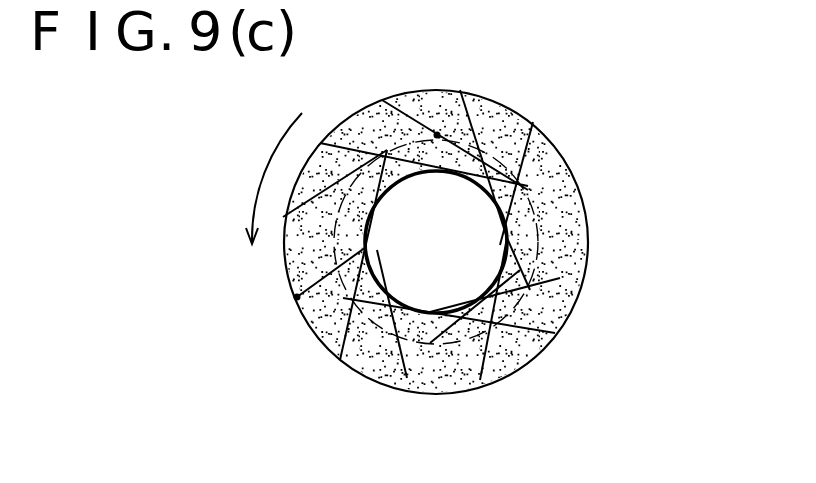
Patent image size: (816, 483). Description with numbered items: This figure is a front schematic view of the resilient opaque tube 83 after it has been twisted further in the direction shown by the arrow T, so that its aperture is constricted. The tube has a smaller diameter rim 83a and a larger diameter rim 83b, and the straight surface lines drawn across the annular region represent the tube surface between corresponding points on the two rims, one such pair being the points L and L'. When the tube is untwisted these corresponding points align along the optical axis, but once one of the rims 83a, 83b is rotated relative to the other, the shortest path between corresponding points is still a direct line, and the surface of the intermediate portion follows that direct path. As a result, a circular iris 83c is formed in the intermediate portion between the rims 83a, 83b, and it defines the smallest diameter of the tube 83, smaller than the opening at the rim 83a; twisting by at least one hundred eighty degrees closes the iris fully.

The resilient opaque tube 83 is at (597, 167).
The smaller diameter rim 83a is at (357, 357).
The larger diameter rim 83b is at (543, 352).
The circular iris 83c is at (405, 305).
The corresponding point L is at (401, 235).
The corresponding point L' is at (449, 91).
The arrow indicating twisting direction T is at (270, 178).